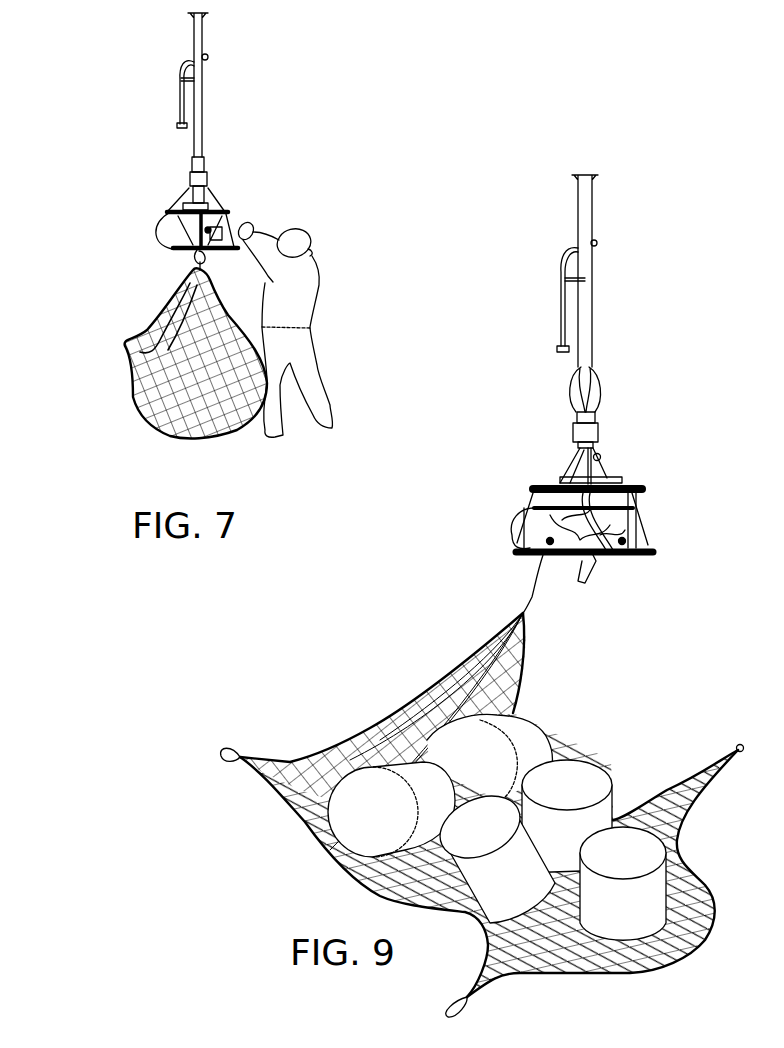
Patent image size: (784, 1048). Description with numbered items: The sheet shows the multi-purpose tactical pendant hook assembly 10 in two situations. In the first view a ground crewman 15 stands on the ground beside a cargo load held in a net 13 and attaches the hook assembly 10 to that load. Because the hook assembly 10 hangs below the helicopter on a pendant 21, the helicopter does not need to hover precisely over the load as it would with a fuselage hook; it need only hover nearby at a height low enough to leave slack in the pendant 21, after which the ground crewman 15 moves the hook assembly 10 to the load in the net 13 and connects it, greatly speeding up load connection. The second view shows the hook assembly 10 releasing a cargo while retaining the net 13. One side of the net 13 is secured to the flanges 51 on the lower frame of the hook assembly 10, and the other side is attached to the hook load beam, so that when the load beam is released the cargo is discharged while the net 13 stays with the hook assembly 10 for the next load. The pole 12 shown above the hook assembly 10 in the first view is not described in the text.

In FIG. 7, the multi-purpose tactical pendant hook assembly 10 is at (240, 172).
In FIG. 9, the multi-purpose tactical pendant hook assembly 10 is at (648, 458).
In FIG. 7, the pole 12 is at (202, 60).
In FIG. 7, the net 13 is at (135, 373).
In FIG. 9, the net 13 is at (412, 710).
In FIG. 7, the ground crewman 15 is at (300, 307).
In FIG. 9, the pendant 21 is at (590, 313).
In FIG. 9, the flanges 51 is at (546, 540).